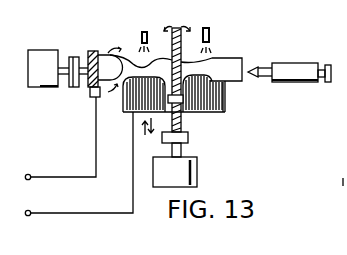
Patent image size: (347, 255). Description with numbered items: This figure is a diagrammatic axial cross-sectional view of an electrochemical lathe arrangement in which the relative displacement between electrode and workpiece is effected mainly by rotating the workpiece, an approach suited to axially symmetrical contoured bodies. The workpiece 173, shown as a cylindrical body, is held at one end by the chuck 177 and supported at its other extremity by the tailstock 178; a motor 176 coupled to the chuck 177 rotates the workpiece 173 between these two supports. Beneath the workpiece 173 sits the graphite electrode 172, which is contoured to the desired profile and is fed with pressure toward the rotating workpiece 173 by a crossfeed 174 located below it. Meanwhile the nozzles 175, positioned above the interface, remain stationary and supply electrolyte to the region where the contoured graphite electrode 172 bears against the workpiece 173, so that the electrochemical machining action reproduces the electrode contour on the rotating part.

The graphite electrode 172 is at (224, 111).
The workpiece 173 is at (235, 80).
The crossfeed 174 is at (188, 159).
The nozzles 175 is at (142, 31).
The motor 176 is at (49, 78).
The chuck 177 is at (100, 49).
The tailstock 178 is at (285, 66).